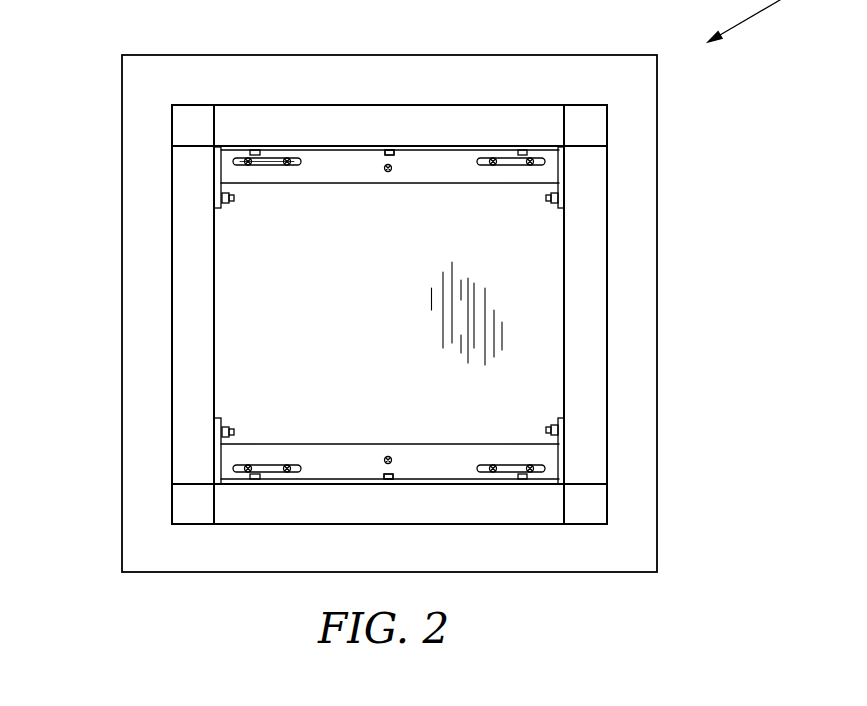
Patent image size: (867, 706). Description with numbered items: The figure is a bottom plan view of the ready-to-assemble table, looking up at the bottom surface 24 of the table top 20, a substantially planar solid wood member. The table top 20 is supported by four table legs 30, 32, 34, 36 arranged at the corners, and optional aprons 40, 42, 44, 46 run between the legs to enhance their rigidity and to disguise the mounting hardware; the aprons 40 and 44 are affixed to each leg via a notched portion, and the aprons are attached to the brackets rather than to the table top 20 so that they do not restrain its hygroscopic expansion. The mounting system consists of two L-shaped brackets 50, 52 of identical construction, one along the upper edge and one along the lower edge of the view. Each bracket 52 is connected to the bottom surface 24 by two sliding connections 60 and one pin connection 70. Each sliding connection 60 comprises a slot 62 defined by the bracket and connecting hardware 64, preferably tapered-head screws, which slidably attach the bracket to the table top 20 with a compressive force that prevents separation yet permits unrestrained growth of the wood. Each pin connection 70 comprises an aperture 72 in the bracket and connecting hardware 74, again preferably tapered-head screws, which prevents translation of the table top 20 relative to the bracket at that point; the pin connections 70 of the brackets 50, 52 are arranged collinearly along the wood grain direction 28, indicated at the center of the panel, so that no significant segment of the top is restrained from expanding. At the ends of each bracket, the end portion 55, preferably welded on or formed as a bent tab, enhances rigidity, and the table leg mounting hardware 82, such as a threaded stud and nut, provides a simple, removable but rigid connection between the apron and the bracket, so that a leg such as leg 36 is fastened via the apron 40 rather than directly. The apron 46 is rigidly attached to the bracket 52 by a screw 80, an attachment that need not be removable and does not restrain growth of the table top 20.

The table top 20 is at (121, 160).
The bottom surface 24 is at (230, 350).
The wood grain direction 28 is at (507, 333).
The table leg 30 is at (182, 506).
The table leg 32 is at (594, 503).
The table leg 34 is at (594, 127).
The table leg 36 is at (181, 123).
The apron 40 is at (187, 415).
The apron 42 is at (258, 512).
The apron 44 is at (592, 237).
The apron 46 is at (293, 118).
The bracket 50 is at (417, 476).
The bracket 52 is at (349, 152).
The end portion 55 is at (218, 180).
The sliding connection 60 is at (306, 172).
The slot 62 is at (269, 167).
The connecting hardware 64 is at (249, 157).
The pin connection 70 is at (385, 457).
The aperture 72 is at (395, 457).
The connecting hardware 74 is at (388, 172).
The screw 80 is at (396, 152).
The table leg mounting hardware 82 is at (546, 430).